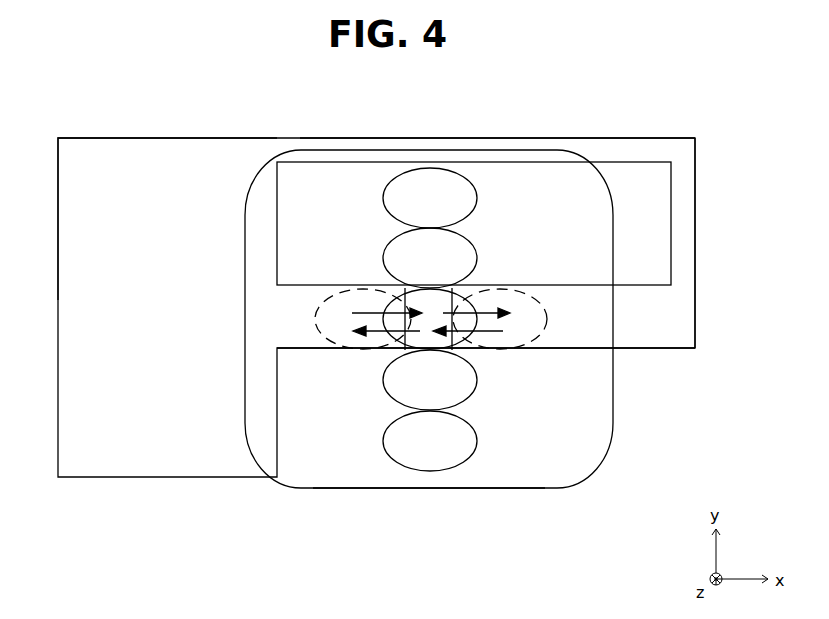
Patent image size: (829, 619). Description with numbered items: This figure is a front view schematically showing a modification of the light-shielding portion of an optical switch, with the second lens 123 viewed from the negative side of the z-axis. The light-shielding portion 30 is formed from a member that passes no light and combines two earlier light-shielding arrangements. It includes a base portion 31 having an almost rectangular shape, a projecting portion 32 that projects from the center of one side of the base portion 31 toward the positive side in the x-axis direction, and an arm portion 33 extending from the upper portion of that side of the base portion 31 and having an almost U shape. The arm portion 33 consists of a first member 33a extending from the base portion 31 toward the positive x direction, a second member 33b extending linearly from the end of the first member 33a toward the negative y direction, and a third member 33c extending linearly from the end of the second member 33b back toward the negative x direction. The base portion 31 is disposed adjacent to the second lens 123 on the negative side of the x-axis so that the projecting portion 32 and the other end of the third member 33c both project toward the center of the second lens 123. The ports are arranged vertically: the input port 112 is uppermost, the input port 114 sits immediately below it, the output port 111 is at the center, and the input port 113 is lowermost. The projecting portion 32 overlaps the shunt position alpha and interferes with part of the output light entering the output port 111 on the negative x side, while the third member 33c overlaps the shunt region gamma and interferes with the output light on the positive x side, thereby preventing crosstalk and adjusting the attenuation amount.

The light-shielding portion 30 is at (58, 295).
The base portion 31 is at (152, 137).
The projecting portion 32 is at (305, 287).
The arm portion 33 is at (373, 137).
The first member 33a is at (556, 137).
The second member 33b is at (695, 210).
The third member 33c is at (636, 352).
The output port 111 is at (458, 288).
The input port 112 is at (383, 198).
The input port 113 is at (383, 440).
The input port 114 is at (383, 257).
The second lens 123 is at (426, 490).